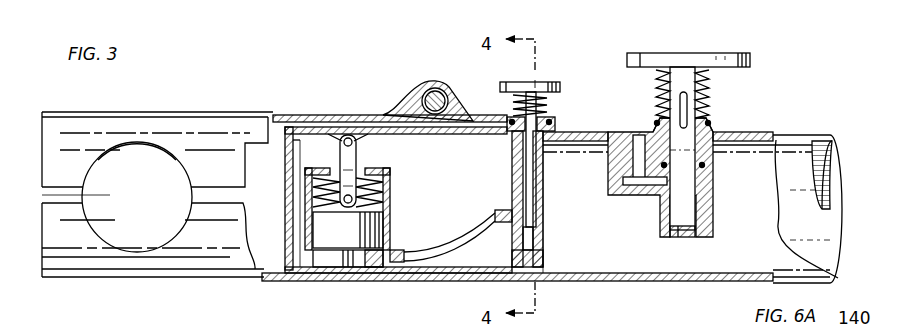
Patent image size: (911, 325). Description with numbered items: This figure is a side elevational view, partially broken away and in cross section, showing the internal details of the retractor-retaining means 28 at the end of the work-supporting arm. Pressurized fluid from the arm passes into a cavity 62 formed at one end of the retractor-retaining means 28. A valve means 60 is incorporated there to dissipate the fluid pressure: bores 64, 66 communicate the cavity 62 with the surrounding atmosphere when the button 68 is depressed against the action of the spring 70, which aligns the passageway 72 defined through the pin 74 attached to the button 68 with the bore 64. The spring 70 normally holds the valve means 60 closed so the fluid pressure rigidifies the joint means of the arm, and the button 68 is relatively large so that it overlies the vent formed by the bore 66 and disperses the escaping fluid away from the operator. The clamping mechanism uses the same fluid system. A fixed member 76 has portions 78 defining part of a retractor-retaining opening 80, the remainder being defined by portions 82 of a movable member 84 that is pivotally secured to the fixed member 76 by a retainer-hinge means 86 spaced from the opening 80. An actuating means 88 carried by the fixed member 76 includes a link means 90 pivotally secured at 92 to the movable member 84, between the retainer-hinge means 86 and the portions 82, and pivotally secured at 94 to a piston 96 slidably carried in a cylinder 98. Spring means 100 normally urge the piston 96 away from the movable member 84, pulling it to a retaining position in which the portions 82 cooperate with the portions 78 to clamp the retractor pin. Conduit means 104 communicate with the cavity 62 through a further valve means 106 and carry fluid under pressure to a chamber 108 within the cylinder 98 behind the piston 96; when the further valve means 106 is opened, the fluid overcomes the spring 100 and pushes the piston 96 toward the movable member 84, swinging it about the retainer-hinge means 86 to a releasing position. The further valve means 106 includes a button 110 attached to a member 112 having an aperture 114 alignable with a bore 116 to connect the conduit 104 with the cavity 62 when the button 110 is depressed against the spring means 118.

The retractor-retaining means 28 is at (308, 66).
The valve means 60 is at (765, 71).
The cavity 62 is at (593, 237).
The bore 64 is at (662, 203).
The bore 66 is at (633, 160).
The button 68 is at (637, 53).
The spring 70 is at (655, 96).
The passageway 72 is at (716, 127).
The pin 74 is at (682, 232).
The fixed member 76 is at (208, 266).
The portions 78 is at (128, 253).
The retractor-retaining opening 80 is at (100, 198).
The portions 82 is at (142, 144).
The movable member 84 is at (215, 128).
The retainer-hinge means 86 is at (435, 86).
The actuating means 88 is at (410, 194).
The link means 90 is at (352, 164).
The pivot 92 is at (348, 137).
The pivot 94 is at (347, 209).
The piston 96 is at (330, 252).
The cylinder 98 is at (290, 224).
The spring means 100 is at (288, 190).
The conduit means 104 is at (438, 236).
The further valve means 106 is at (498, 82).
The chamber 108 is at (372, 263).
The button 110 is at (550, 86).
The member 112 is at (523, 172).
The aperture 114 is at (520, 192).
The bore 116 is at (545, 220).
The spring means 118 is at (512, 102).